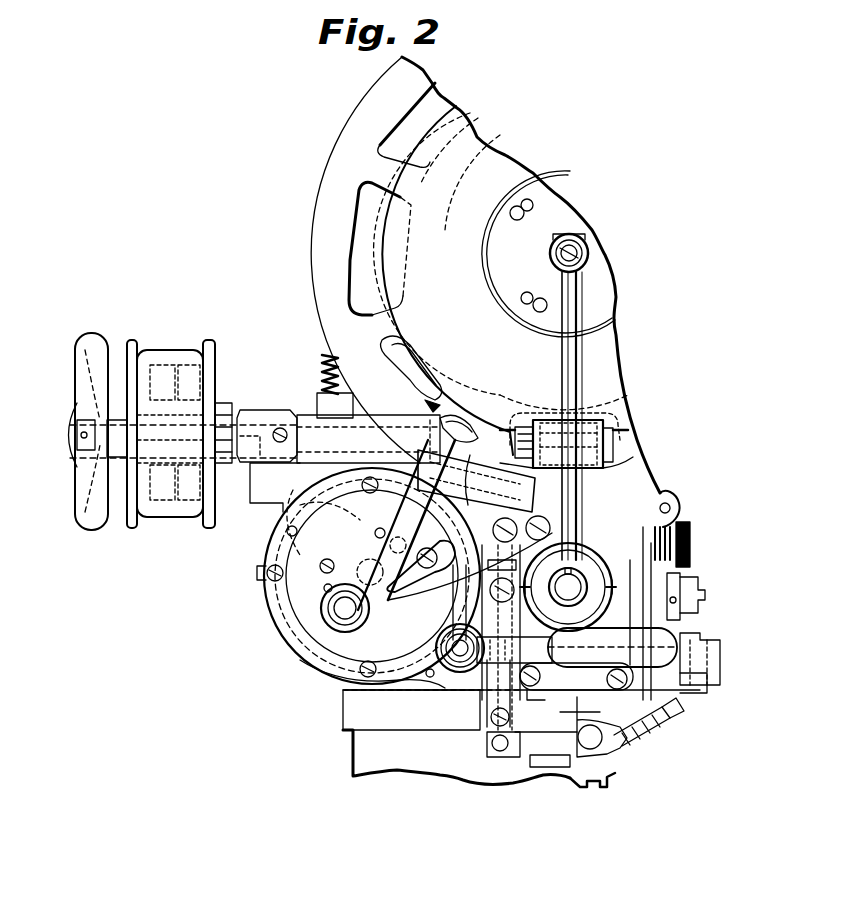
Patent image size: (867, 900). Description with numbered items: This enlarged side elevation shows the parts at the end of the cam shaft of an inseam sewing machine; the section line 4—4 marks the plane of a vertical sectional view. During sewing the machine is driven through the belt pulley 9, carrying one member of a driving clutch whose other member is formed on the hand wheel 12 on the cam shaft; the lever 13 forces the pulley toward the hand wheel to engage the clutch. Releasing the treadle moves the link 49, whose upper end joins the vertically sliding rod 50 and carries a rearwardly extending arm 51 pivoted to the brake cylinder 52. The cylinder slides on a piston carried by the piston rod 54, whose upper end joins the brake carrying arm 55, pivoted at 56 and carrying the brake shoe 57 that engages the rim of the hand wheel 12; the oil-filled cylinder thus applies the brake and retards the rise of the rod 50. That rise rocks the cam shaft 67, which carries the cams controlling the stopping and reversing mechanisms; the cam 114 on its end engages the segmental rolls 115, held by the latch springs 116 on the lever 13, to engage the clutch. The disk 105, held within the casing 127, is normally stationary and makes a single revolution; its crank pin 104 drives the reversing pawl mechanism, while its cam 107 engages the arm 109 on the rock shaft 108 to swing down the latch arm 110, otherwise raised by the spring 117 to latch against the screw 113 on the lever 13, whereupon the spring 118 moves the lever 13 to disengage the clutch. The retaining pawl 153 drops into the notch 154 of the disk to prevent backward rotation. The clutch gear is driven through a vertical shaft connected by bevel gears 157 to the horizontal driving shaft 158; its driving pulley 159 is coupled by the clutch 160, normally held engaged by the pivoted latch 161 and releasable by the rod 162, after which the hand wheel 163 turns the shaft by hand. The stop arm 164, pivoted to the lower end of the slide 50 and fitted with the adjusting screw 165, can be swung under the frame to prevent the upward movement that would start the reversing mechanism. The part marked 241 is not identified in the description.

The section line 4— 4 is at (571, 160).
The belt pulley 9 is at (393, 252).
The hand wheel 12 is at (335, 180).
The lever 13 is at (569, 367).
The link 49 is at (603, 776).
The vertically sliding rod 50 is at (590, 714).
The rearwardly extending arm 51 is at (545, 745).
The brake cylinder 52 is at (487, 745).
The piston rod 54 is at (506, 530).
The brake carrying arm 55 is at (475, 520).
The pivot 56 is at (575, 545).
The brake shoe 57 is at (395, 434).
The cam shaft 67 is at (549, 682).
The crank pin 104 is at (350, 613).
The disk 105 is at (300, 587).
The cam 107 is at (385, 534).
The rock shaft 108 is at (462, 650).
The arm 109 is at (447, 582).
The latch arm 110 is at (690, 652).
The screw 113 is at (576, 678).
The cam 114 is at (612, 545).
The segmental rolls 115 is at (678, 548).
The latch springs 116 is at (592, 668).
The spring 117 is at (470, 688).
The spring 118 is at (470, 586).
The casing 127 is at (262, 492).
The retaining pawl 153 is at (280, 533).
The notch 154 is at (300, 531).
The bevel gears 157 is at (452, 400).
The horizontal driving shaft 158 is at (306, 423).
The driving pulley 159 is at (172, 357).
The clutch 160 is at (228, 403).
The pivoted latch 161 is at (255, 420).
The rod 162 is at (72, 432).
The hand wheel 163 is at (92, 347).
The stop arm 164 is at (612, 757).
The adjusting screw 165 is at (682, 708).
The stop bracket 241 is at (690, 593).